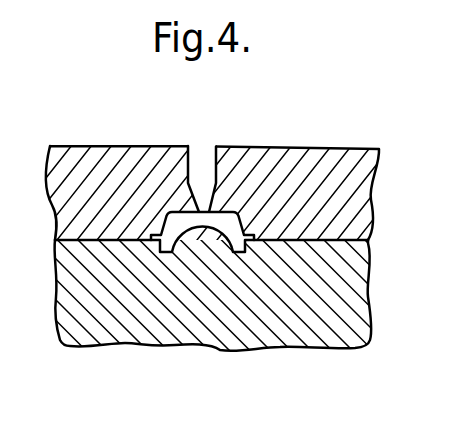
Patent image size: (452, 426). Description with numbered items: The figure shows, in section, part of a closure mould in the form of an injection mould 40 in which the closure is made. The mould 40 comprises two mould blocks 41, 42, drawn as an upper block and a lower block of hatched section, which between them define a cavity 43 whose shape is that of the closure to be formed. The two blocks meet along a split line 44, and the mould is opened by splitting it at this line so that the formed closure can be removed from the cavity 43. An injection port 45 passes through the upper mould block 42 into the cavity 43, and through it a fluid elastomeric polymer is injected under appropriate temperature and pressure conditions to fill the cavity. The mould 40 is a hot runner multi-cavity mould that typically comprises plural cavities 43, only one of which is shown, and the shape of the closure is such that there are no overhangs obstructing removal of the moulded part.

The injection mould 40 is at (401, 137).
The mould block 41 is at (284, 313).
The mould block 42 is at (110, 167).
The cavity 43 is at (228, 227).
The split line 44 is at (97, 242).
The injection port 45 is at (204, 162).